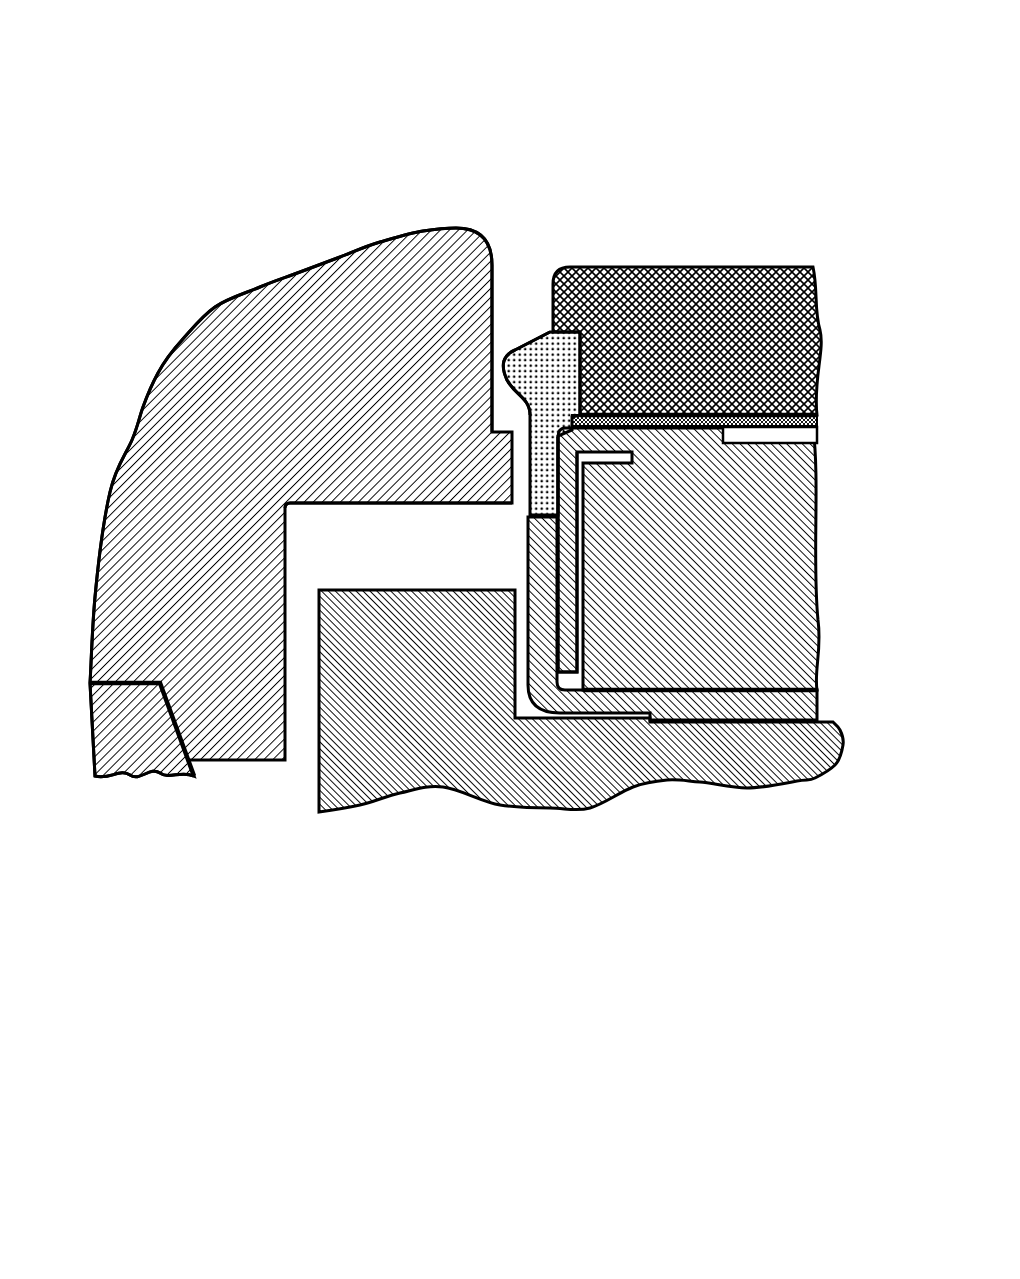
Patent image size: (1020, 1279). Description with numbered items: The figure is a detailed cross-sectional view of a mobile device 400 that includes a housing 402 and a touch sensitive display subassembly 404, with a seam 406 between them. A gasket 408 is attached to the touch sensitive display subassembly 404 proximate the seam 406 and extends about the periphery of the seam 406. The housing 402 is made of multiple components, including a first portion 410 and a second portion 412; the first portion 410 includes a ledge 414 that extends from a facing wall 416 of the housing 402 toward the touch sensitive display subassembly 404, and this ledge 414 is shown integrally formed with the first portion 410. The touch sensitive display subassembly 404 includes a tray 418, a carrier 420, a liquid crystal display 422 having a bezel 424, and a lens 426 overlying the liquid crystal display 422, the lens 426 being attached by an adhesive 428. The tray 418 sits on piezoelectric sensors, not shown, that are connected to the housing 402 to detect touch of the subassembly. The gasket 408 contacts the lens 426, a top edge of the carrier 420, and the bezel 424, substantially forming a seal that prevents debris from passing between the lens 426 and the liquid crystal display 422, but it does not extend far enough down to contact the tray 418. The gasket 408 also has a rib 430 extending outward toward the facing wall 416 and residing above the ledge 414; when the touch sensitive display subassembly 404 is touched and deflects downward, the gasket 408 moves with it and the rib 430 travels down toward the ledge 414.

The mobile device 400 is at (590, 125).
The housing 402 is at (272, 461).
The touch sensitive display subassembly 404 is at (604, 562).
The seam 406 is at (541, 262).
The gasket 408 is at (526, 361).
The first portion 410 is at (132, 492).
The second portion 412 is at (125, 740).
The ledge 414 is at (455, 513).
The facing wall 416 is at (493, 313).
The tray 418 is at (393, 768).
The carrier 420 is at (817, 712).
The liquid crystal display 422 is at (787, 605).
The bezel 424 is at (568, 574).
The lens 426 is at (572, 286).
The adhesive 428 is at (817, 421).
The rib 430 is at (508, 350).